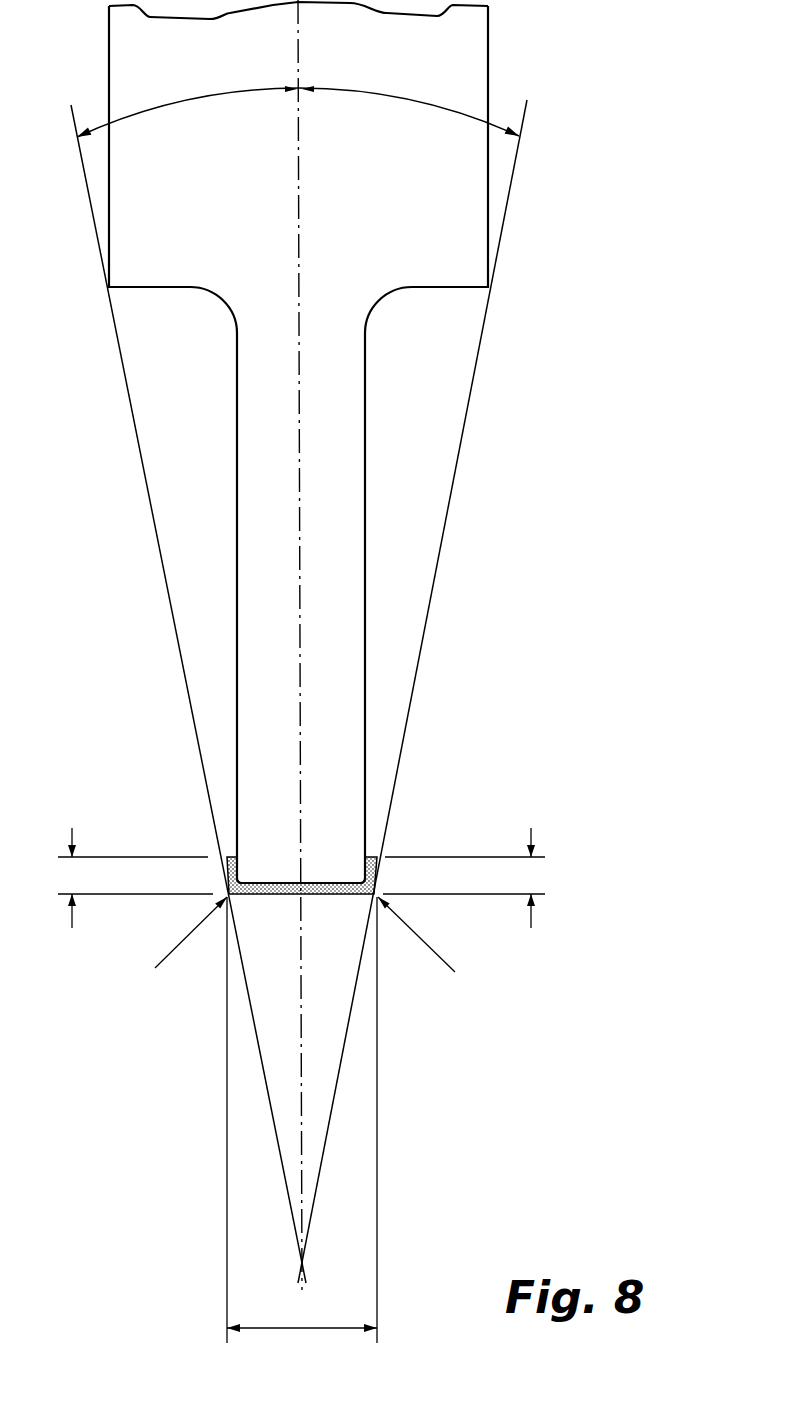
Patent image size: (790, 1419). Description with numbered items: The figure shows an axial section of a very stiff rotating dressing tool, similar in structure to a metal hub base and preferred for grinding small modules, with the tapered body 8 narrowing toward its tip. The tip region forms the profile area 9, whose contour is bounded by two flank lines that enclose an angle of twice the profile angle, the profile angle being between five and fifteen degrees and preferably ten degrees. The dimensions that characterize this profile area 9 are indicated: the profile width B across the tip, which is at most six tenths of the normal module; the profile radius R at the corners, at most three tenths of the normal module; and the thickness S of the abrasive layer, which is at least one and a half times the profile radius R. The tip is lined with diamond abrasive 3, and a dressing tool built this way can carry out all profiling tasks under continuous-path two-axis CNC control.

The soldering tip body 8 is at (466, 78).
The profile area 9 is at (390, 555).
The diamond abrasive 3 is at (328, 897).
The thickness of the abrasive layer S is at (297, 878).
The profile radius R is at (301, 934).
The profile width B is at (302, 1120).